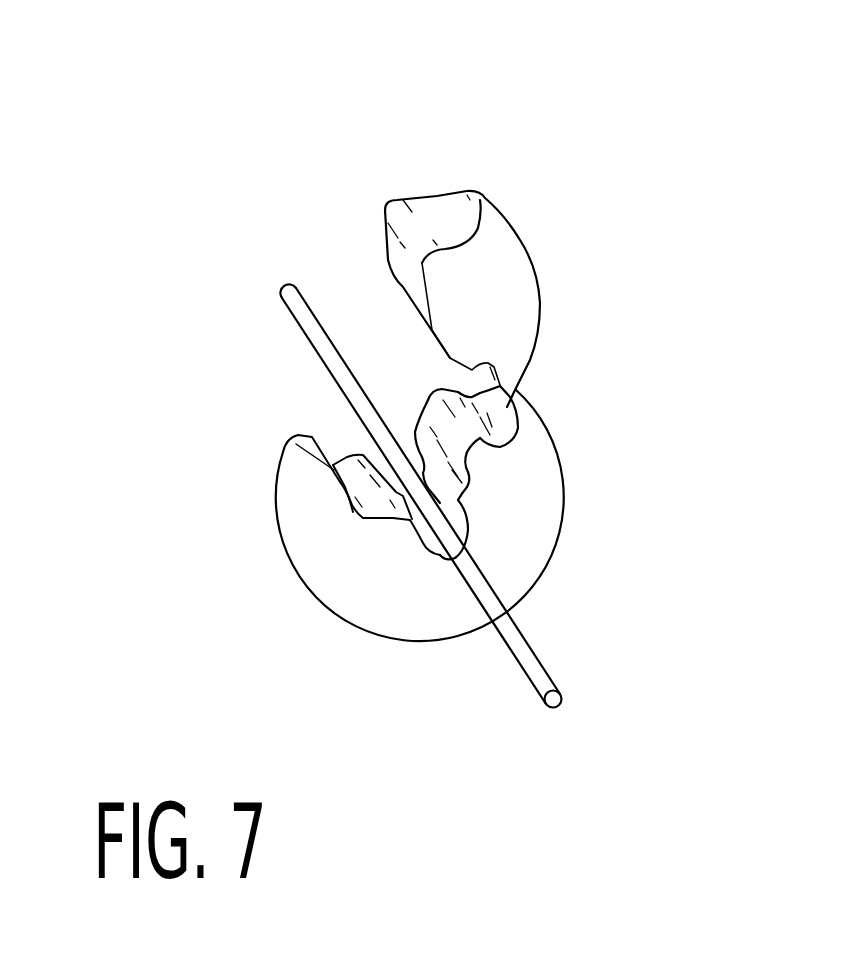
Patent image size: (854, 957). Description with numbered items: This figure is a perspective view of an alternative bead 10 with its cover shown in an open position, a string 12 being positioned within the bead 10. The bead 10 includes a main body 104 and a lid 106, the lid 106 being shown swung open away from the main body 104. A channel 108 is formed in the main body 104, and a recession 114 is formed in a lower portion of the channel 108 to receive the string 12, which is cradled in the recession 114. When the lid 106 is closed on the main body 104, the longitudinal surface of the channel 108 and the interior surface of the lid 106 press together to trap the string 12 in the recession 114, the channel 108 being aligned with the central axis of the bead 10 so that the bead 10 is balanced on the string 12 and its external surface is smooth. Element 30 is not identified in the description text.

The bead 10 is at (418, 167).
The string 12 is at (528, 653).
The clip 30 is at (517, 388).
The main body 104 is at (313, 569).
The lid 106 is at (521, 267).
The channel 108 is at (470, 469).
The recession 114 is at (465, 525).